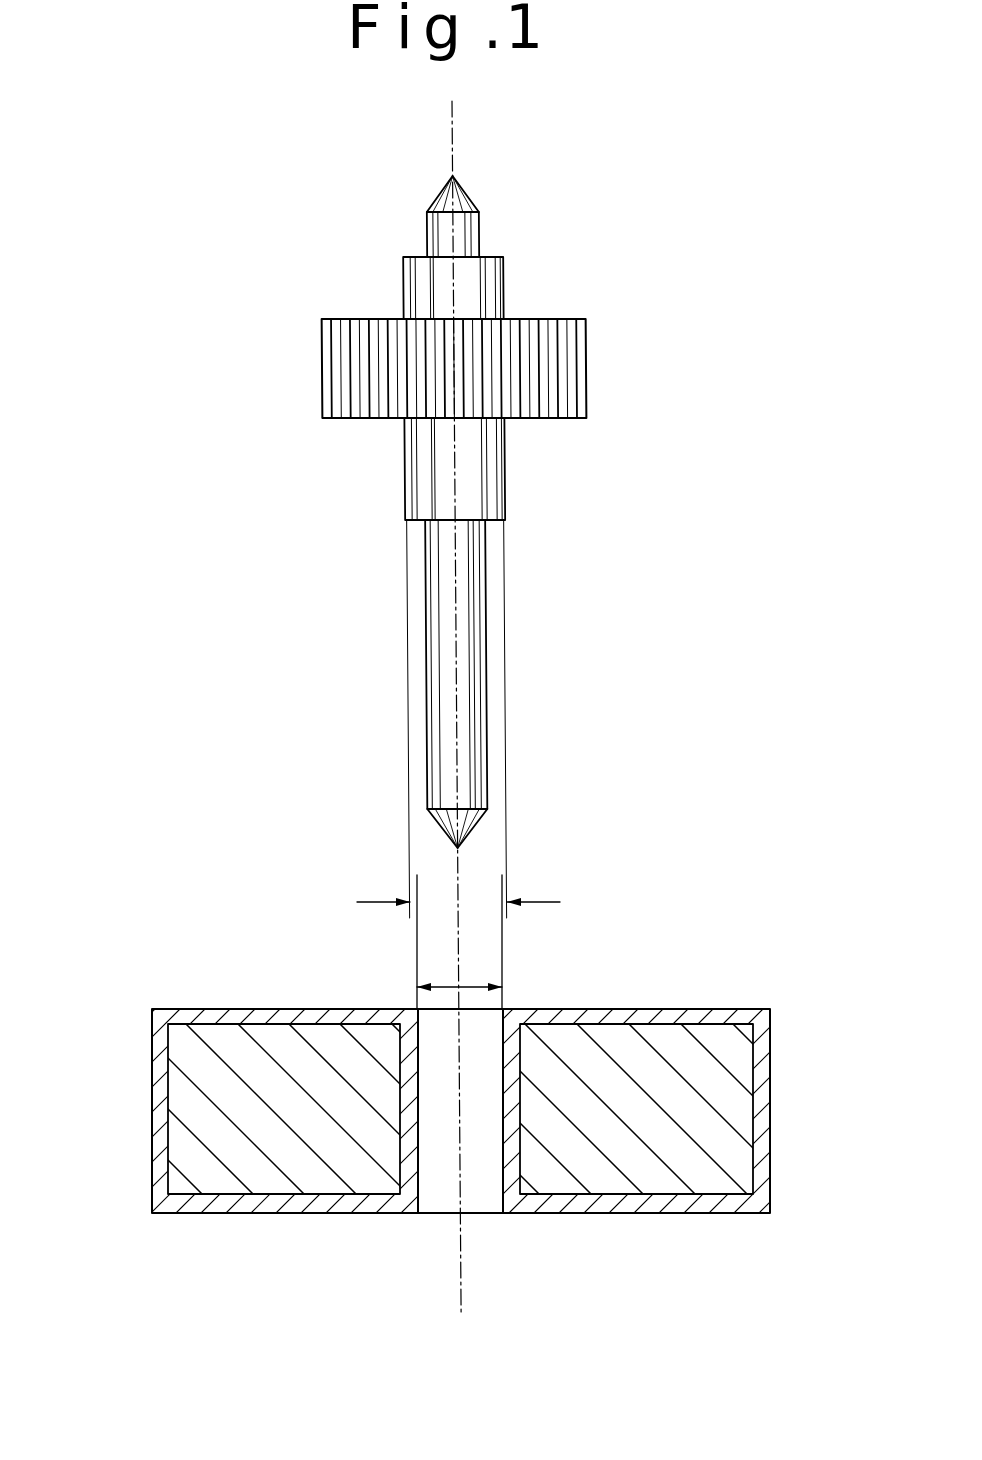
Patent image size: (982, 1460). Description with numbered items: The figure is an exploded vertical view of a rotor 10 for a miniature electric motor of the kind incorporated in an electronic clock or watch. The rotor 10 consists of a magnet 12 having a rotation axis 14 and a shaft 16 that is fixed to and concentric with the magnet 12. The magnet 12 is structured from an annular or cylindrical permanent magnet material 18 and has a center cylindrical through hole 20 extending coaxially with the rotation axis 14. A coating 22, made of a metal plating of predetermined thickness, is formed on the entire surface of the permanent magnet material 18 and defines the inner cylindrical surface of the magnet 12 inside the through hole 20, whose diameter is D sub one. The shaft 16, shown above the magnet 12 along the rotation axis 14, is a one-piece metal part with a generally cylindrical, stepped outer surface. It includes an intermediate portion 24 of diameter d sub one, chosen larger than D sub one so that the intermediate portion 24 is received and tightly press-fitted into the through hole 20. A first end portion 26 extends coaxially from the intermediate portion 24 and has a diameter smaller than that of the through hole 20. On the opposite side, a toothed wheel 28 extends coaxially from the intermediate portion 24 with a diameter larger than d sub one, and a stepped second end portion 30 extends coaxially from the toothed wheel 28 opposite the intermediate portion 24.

The rotor 10 is at (112, 428).
The magnet 12 is at (192, 997).
The rotation axis 14 is at (461, 1298).
The shaft 16 is at (300, 436).
The permanent magnet material 18 is at (228, 1155).
The through hole 20 is at (503, 1106).
The coating 22 is at (771, 1096).
The intermediate portion 24 is at (506, 476).
The first end portion 26 is at (488, 688).
The toothed wheel 28 is at (588, 366).
The stepped second end portion 30 is at (481, 236).